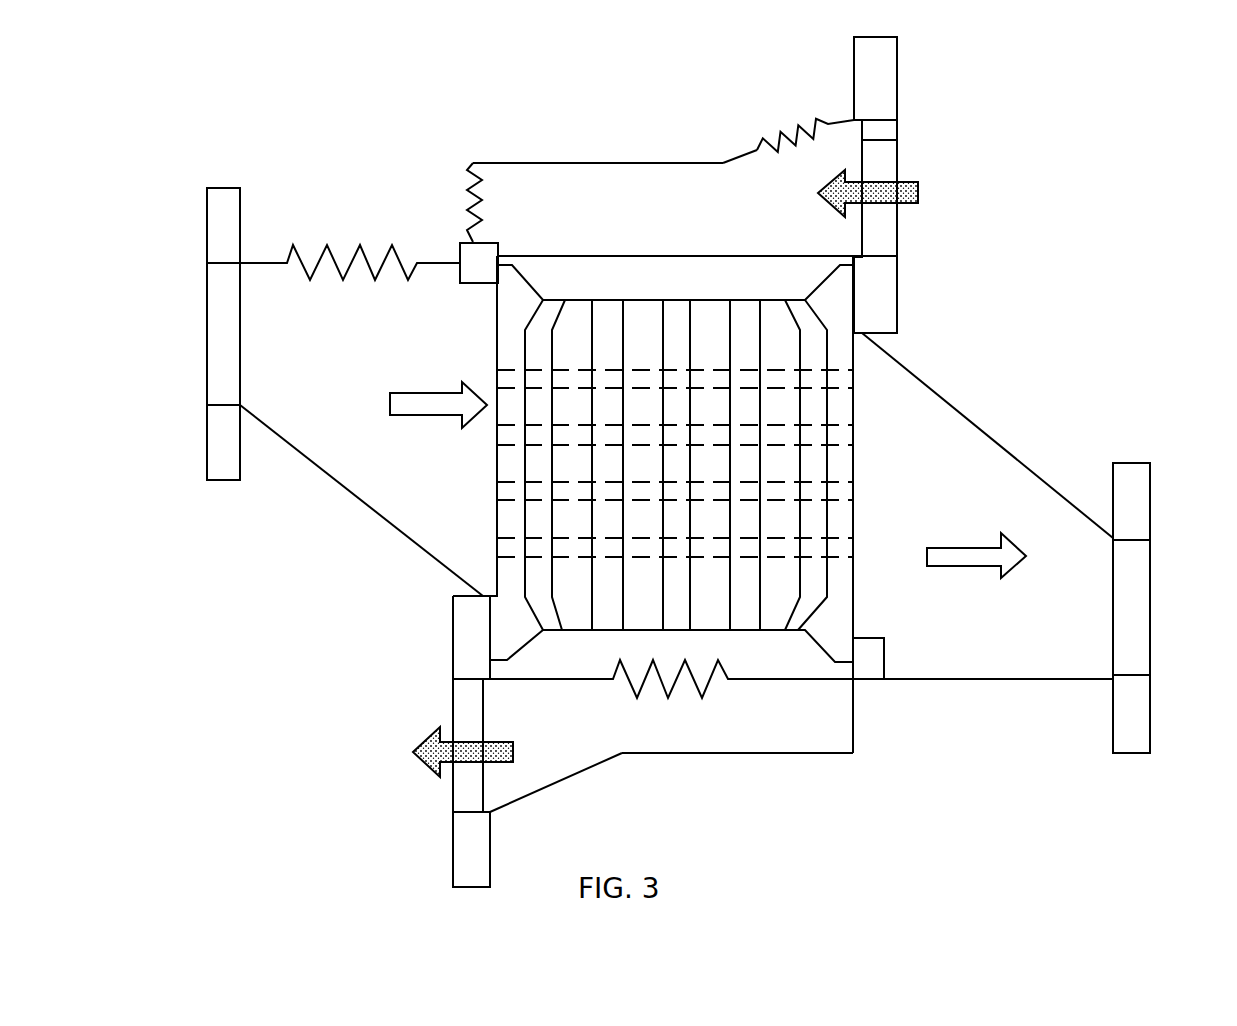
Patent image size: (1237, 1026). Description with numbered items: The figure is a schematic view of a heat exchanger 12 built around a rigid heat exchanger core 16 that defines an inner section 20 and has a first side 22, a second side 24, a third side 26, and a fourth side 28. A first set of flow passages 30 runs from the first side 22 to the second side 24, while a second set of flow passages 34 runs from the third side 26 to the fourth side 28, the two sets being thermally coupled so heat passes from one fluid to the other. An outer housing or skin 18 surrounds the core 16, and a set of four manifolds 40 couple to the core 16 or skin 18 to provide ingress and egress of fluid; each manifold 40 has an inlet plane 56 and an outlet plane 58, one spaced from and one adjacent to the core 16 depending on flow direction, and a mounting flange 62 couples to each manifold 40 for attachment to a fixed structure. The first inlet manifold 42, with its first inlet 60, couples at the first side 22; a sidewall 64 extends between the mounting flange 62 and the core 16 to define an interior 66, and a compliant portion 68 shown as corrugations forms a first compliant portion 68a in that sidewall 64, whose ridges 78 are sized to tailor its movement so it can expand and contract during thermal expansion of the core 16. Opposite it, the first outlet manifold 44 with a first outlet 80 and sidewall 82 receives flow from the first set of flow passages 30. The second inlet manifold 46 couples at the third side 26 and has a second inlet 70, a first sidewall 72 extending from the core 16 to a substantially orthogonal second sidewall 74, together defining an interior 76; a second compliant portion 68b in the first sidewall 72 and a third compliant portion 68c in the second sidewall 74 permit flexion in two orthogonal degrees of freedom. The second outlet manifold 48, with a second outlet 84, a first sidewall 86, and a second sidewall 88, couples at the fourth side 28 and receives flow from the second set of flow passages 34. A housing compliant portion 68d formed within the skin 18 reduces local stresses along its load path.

The heat exchanger 12 is at (1078, 124).
The heat exchanger core 16 is at (842, 304).
The skin 18 is at (857, 398).
The inner section 20 is at (838, 573).
The first side 22 is at (498, 572).
The second side 24 is at (855, 474).
The third side 26 is at (755, 257).
The fourth side 28 is at (825, 680).
The first set of flow passages 30 is at (498, 533).
The second set of flow passages 34 is at (855, 456).
The manifold 40 is at (303, 460).
The first inlet manifold 42 is at (260, 288).
The first outlet manifold 44 is at (1024, 500).
The second inlet manifold 46 is at (650, 190).
The second outlet manifold 48 is at (685, 741).
The inlet plane 56 is at (243, 378).
The outlet plane 58 is at (497, 457).
The first inlet 60 is at (207, 331).
The mounting flange 62 is at (218, 227).
The sidewall 64 is at (430, 262).
The interior 66 is at (334, 362).
The compliant portion 68 is at (348, 280).
The first compliant portion 68a is at (340, 257).
The second compliant portion 68b is at (467, 172).
The third compliant portion 68c is at (815, 120).
The housing compliant portion 68d is at (715, 686).
The second inlet 70 is at (897, 235).
The first sidewall 72 is at (475, 240).
The second sidewall 74 is at (688, 163).
The interior 76 is at (648, 241).
The ridges 78 is at (303, 270).
The first outlet 80 is at (1152, 610).
The sidewall 82 is at (967, 681).
The second outlet 84 is at (452, 788).
The first sidewall 86 is at (854, 743).
The second sidewall 88 is at (588, 768).